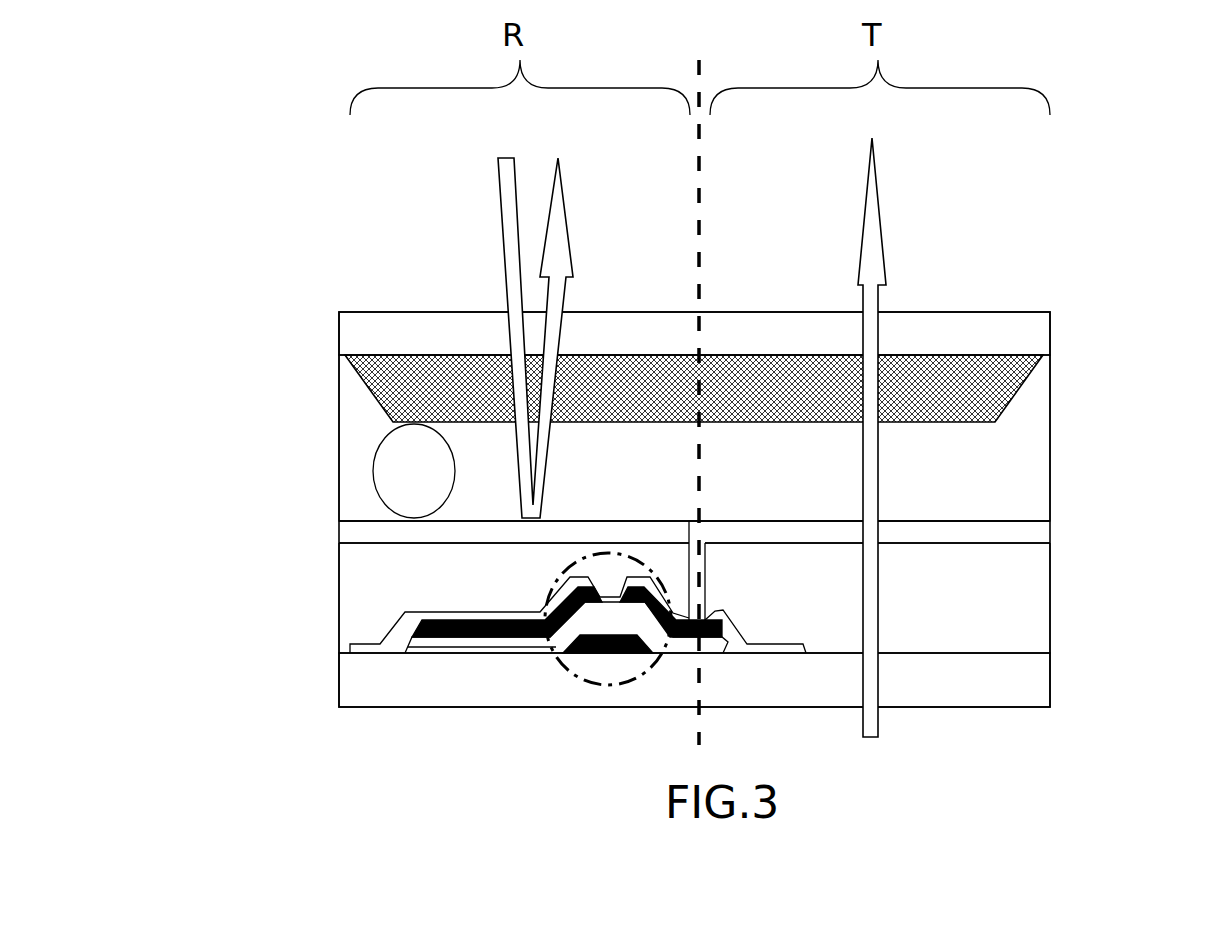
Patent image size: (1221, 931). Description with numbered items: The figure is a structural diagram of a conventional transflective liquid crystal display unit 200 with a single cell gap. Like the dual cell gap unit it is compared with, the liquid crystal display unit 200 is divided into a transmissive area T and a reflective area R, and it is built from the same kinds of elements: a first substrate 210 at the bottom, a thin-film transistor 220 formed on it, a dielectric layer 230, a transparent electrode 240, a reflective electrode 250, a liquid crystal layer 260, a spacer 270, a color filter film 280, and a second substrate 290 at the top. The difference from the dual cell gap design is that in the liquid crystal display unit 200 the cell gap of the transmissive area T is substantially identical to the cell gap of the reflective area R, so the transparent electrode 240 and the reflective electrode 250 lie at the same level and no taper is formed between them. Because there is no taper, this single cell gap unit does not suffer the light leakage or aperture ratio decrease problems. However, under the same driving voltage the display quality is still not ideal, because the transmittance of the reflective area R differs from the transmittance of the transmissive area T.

The liquid crystal display unit 200 is at (408, 755).
The first substrate 210 is at (382, 686).
The thin-film transistor 220 is at (548, 594).
The dielectric layer 230 is at (1029, 609).
The transparent electrode 240 is at (1029, 530).
The reflective electrode 250 is at (383, 531).
The liquid crystal layer 260 is at (1029, 455).
The spacer 270 is at (400, 481).
The color filter film 280 is at (415, 400).
The second substrate 290 is at (403, 329).